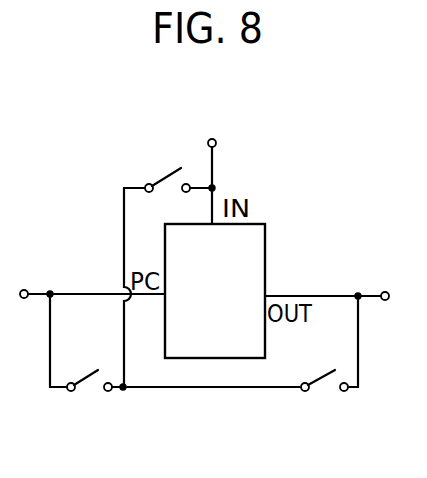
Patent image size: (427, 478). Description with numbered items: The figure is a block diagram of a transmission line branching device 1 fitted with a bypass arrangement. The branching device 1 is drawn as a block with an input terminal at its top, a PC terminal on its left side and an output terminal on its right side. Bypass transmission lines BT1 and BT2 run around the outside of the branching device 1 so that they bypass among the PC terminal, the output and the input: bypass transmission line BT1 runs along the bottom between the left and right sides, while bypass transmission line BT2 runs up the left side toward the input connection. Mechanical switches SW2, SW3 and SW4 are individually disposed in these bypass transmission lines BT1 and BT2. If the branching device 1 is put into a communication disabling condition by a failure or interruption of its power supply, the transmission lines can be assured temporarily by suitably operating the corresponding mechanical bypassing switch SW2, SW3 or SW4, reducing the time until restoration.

The transmission line branching device 1 is at (265, 224).
The mechanical switch SW2 is at (83, 378).
The mechanical switch SW3 is at (167, 175).
The mechanical switch SW4 is at (320, 380).
The bypass transmission line BT1 is at (225, 387).
The bypass transmission line BT2 is at (124, 227).